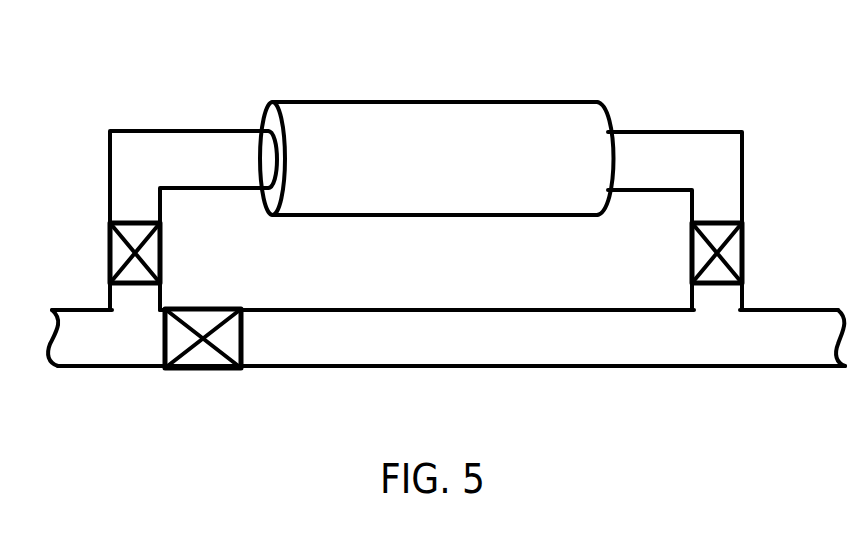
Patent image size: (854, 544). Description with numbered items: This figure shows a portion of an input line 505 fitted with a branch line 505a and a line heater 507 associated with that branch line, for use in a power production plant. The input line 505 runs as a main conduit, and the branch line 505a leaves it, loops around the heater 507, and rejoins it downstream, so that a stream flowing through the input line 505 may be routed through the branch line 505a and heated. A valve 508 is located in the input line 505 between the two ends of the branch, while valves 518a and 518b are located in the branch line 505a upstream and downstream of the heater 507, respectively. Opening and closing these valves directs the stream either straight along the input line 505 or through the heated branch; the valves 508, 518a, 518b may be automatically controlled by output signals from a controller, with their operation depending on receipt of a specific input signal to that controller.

The input line 505 is at (422, 312).
The branch line 505a is at (192, 130).
The heater 507 is at (467, 100).
The valve 508 is at (208, 308).
The valve 518a is at (108, 237).
The valve 518b is at (742, 242).